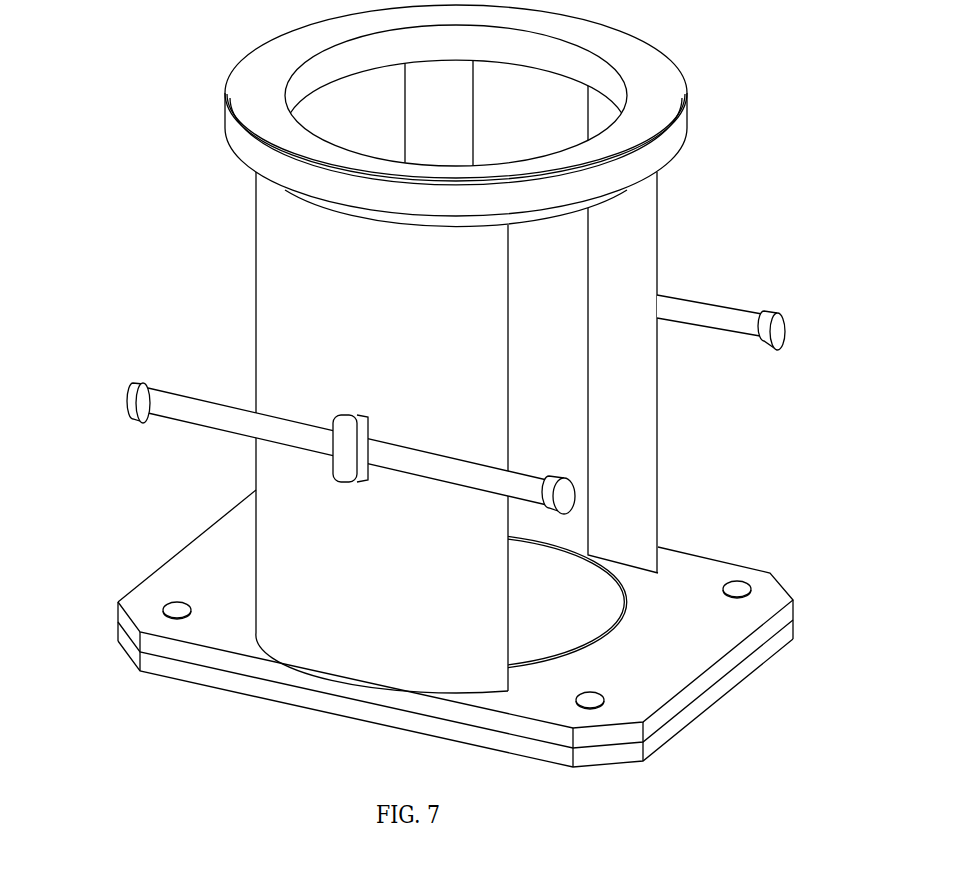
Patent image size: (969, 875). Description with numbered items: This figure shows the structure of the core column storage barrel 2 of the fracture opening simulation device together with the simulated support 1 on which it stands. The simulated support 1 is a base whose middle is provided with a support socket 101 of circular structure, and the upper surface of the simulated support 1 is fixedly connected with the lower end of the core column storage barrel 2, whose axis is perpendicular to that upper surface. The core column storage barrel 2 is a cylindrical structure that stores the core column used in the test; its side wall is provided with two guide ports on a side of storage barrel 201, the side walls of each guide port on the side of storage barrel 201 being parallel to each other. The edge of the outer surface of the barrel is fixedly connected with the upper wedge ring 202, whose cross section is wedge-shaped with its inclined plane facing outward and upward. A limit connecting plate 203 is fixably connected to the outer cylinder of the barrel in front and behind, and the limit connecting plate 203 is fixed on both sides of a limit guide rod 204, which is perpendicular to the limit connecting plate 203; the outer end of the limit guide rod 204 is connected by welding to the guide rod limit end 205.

The simulated support 1 is at (222, 583).
The support socket 101 is at (576, 652).
The core column storage barrel 2 is at (367, 555).
The guide port on a side of storage barrel 201 is at (627, 510).
The upper wedge ring 202 is at (678, 152).
The limit connecting plate 203 is at (350, 415).
The limit guide rod 204 is at (213, 417).
The guide rod limit end 205 is at (130, 397).